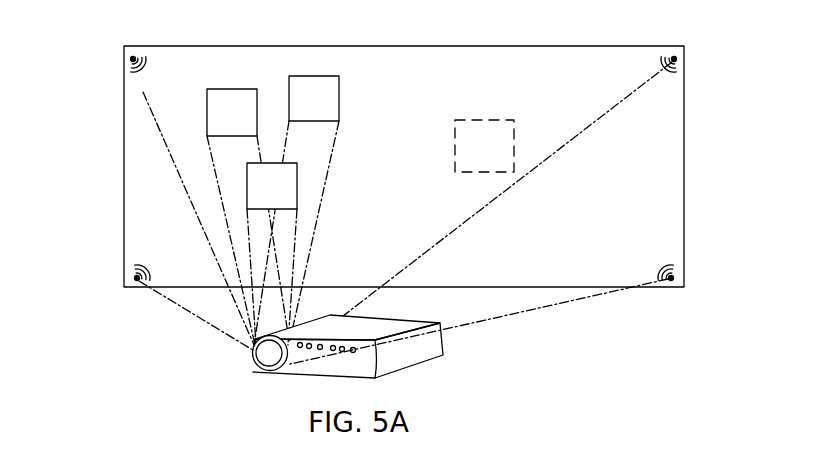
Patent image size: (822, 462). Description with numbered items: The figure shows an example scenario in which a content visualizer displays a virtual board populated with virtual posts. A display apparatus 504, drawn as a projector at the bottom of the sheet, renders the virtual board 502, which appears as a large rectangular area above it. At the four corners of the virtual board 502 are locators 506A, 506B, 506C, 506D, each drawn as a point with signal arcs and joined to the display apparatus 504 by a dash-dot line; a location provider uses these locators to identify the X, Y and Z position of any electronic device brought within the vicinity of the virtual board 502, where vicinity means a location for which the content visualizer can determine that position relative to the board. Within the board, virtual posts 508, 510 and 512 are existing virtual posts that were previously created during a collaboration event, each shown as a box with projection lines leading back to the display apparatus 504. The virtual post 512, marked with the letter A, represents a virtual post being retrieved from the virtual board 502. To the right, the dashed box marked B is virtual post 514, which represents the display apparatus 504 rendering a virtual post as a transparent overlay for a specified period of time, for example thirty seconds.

The virtual board 502 is at (684, 167).
The display apparatus 504 is at (443, 347).
The locator 506A is at (133, 59).
The locator 506B is at (675, 58).
The locator 506C is at (137, 281).
The locator 506D is at (671, 281).
The virtual post 508 is at (240, 89).
The virtual post 510 is at (340, 97).
The virtual post 512 is at (297, 184).
The virtual post 514 is at (484, 120).